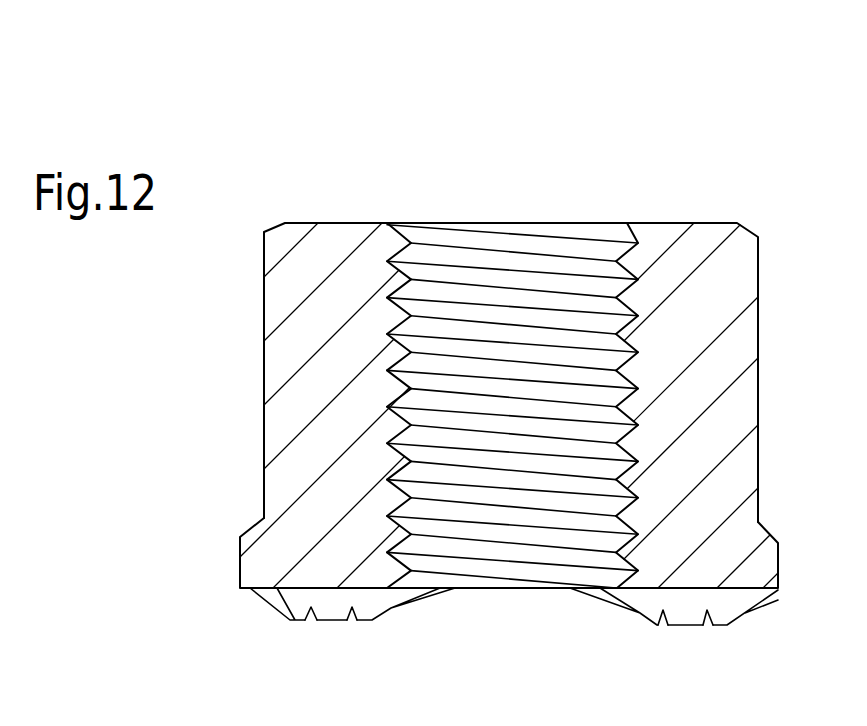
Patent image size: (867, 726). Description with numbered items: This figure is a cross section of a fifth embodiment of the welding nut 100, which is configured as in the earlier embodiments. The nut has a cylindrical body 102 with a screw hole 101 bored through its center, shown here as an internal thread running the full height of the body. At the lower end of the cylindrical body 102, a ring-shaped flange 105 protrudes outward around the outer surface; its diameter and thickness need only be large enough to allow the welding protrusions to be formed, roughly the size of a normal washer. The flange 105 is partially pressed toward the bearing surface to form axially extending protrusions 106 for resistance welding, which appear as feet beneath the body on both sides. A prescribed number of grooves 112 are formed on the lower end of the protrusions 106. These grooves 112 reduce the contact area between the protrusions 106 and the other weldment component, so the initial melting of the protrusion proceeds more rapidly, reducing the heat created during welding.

The welding nut 100 is at (328, 207).
The screw hole 101 is at (620, 262).
The cylindrical body 102 is at (264, 316).
The flange 105 is at (251, 530).
The protrusions 106 is at (392, 608).
The grooves 112 is at (312, 622).